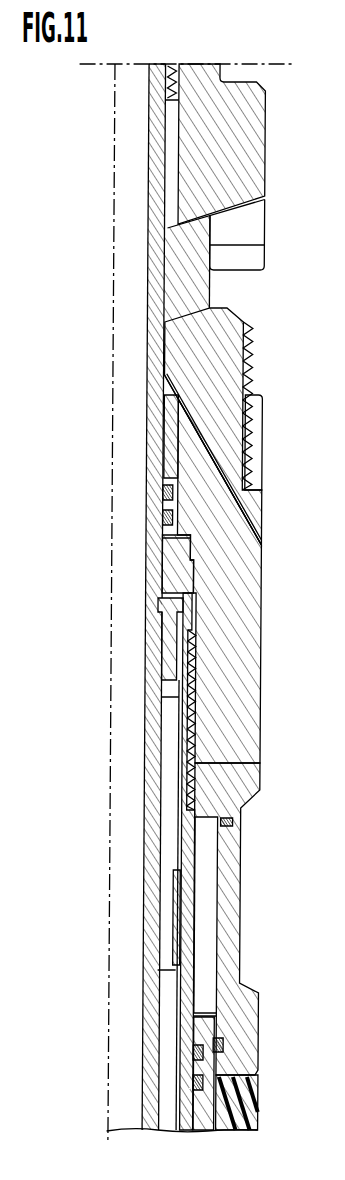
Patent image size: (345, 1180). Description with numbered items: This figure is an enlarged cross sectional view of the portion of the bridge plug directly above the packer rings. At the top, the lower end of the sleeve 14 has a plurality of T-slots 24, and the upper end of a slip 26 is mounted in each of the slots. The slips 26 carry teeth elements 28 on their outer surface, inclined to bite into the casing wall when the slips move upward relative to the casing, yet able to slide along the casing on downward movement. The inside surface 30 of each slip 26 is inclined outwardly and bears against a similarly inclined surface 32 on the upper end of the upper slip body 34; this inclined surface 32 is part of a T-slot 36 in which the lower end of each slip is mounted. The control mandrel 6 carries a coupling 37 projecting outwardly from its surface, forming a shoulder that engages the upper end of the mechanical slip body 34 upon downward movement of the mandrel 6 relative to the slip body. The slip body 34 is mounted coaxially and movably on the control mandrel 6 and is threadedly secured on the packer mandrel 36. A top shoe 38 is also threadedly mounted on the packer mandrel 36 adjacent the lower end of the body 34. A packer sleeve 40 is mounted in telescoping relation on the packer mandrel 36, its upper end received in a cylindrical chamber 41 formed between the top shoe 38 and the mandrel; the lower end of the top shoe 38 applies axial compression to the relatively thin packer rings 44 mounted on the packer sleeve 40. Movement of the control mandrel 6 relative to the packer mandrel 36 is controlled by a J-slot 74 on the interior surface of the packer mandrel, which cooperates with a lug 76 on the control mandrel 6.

The control mandrel 6 is at (153, 790).
The sleeve 14 is at (239, 134).
The T-slots 24 is at (259, 247).
The slip 26 is at (217, 352).
The teeth elements 28 is at (249, 386).
The inside surface 30 is at (167, 387).
The inclined surface 32 is at (245, 510).
The upper slip body 34 is at (243, 693).
The packer mandrel 36 is at (254, 440).
The coupling 37 is at (168, 84).
The top shoe 38 is at (230, 925).
The packer sleeve 40 is at (207, 1098).
The cylindrical chamber 41 is at (213, 965).
The packer rings 44 is at (254, 1120).
The J-slot 74 is at (175, 733).
The lug 76 is at (176, 645).